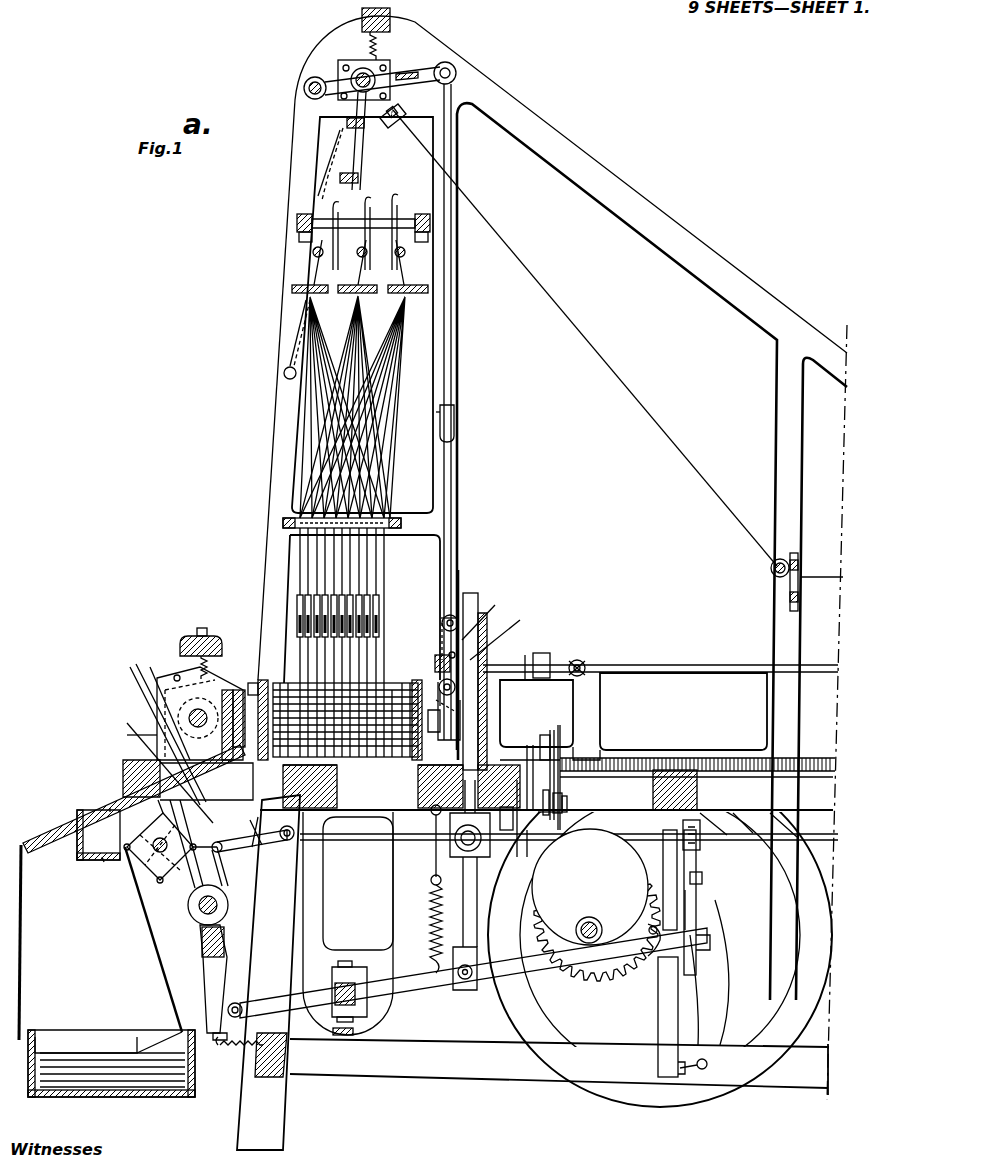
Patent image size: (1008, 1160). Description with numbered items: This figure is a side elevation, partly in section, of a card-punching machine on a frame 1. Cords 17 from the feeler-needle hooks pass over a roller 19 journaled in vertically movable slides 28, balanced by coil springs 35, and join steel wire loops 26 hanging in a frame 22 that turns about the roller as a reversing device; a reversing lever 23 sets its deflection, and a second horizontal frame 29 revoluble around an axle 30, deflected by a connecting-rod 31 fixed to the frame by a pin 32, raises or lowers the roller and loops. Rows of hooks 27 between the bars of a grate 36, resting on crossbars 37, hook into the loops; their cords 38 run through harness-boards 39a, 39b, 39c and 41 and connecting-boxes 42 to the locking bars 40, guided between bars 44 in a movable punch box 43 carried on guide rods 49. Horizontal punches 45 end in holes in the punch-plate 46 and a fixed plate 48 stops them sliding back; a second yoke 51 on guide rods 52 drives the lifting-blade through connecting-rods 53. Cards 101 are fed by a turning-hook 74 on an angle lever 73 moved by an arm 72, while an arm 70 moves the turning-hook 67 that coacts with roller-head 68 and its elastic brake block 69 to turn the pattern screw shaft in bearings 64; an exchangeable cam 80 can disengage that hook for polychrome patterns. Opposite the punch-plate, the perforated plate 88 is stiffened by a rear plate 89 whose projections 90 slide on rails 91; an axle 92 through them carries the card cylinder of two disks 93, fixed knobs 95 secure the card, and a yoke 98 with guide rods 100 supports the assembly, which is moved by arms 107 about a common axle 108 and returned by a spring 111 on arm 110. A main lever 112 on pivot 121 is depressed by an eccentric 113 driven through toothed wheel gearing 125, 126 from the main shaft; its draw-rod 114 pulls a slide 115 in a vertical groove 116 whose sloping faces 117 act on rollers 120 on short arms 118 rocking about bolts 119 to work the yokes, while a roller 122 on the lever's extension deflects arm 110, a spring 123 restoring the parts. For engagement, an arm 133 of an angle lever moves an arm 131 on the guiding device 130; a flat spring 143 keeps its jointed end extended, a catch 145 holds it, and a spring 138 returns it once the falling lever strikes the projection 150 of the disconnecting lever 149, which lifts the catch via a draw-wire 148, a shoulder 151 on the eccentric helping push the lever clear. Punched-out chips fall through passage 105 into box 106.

The frame 1 is at (775, 306).
The cords 17 is at (630, 392).
The roller 19 is at (390, 66).
The frame 22 is at (364, 160).
The reversing lever 23 is at (298, 332).
The steel wire loops 26 is at (345, 146).
The hooks 27 is at (340, 200).
The slides 28 is at (350, 66).
The second horizontal frame 29 is at (402, 76).
The axle 30 is at (305, 86).
The connecting-rod 31 is at (452, 326).
The pin 32 is at (454, 413).
The coil springs 35 is at (366, 58).
The grate 36 is at (297, 222).
The crossbars 37 is at (410, 262).
The cords 38 is at (340, 380).
The harness-board 39a is at (292, 289).
The harness-board 39b is at (350, 294).
The harness-board 39c is at (395, 294).
The locking bars 40 is at (372, 690).
The harness-board 41 is at (283, 525).
The connecting-boxes 42 is at (350, 613).
The punch box 43 is at (394, 688).
The bars 44 is at (352, 758).
The horizontal punches 45 is at (409, 757).
The punch-plate 46 is at (268, 760).
The fixed plate 48 is at (442, 684).
The guide rods 49 is at (428, 688).
The second yoke 51 is at (438, 654).
The guide rods 52 is at (522, 663).
The connecting-rods 53 is at (727, 665).
The bearing 64 is at (538, 752).
The turning-hook 67 is at (556, 792).
The roller-head 68 is at (560, 745).
The elastic brake block 69 is at (550, 740).
The arm 70 is at (524, 824).
The arm 72 is at (250, 833).
The angle lever 73 is at (288, 842).
The turning-hook 74 is at (142, 690).
The exchangeable cam 80 is at (567, 803).
The perforated plate 88 is at (243, 683).
The rear second plate 89 is at (232, 685).
The projections 90 is at (130, 727).
The rails 91 is at (135, 745).
The axle 92 is at (188, 714).
The disks 93 is at (176, 674).
The fixed knobs 95 is at (188, 780).
The yoke 98 is at (212, 634).
The guide rods 100 is at (152, 666).
The cards 101 is at (70, 805).
The passage 105 is at (116, 805).
The box 106 is at (104, 860).
The arms 107 is at (232, 856).
The common axle 108 is at (228, 905).
The arm 110 is at (210, 990).
The spring 111 is at (232, 1050).
The main lever 112 is at (455, 978).
The eccentric 113 is at (590, 887).
The draw-rod 114 is at (496, 890).
The slide 115 is at (475, 592).
The vertical groove 116 is at (494, 609).
The sloping faces 117 is at (511, 631).
The short arms 118 is at (460, 688).
The bolts 119 is at (447, 617).
The rollers 120 is at (585, 663).
The pivot 121 is at (346, 1018).
The roller 122 is at (240, 1003).
The spring 123 is at (432, 935).
The main shaft 125 is at (657, 940).
The toothed wheel gearing 126 is at (596, 988).
The guiding device 130 is at (667, 1077).
The arm 131 is at (697, 963).
The arm 133 is at (700, 828).
The spring 138 is at (700, 846).
The flat spring 143 is at (697, 903).
The catch 145 is at (703, 878).
The draw-wire 148 is at (700, 990).
The lever 149 is at (706, 1062).
The lateral projection 150 is at (690, 1072).
The shoulder 151 is at (576, 936).